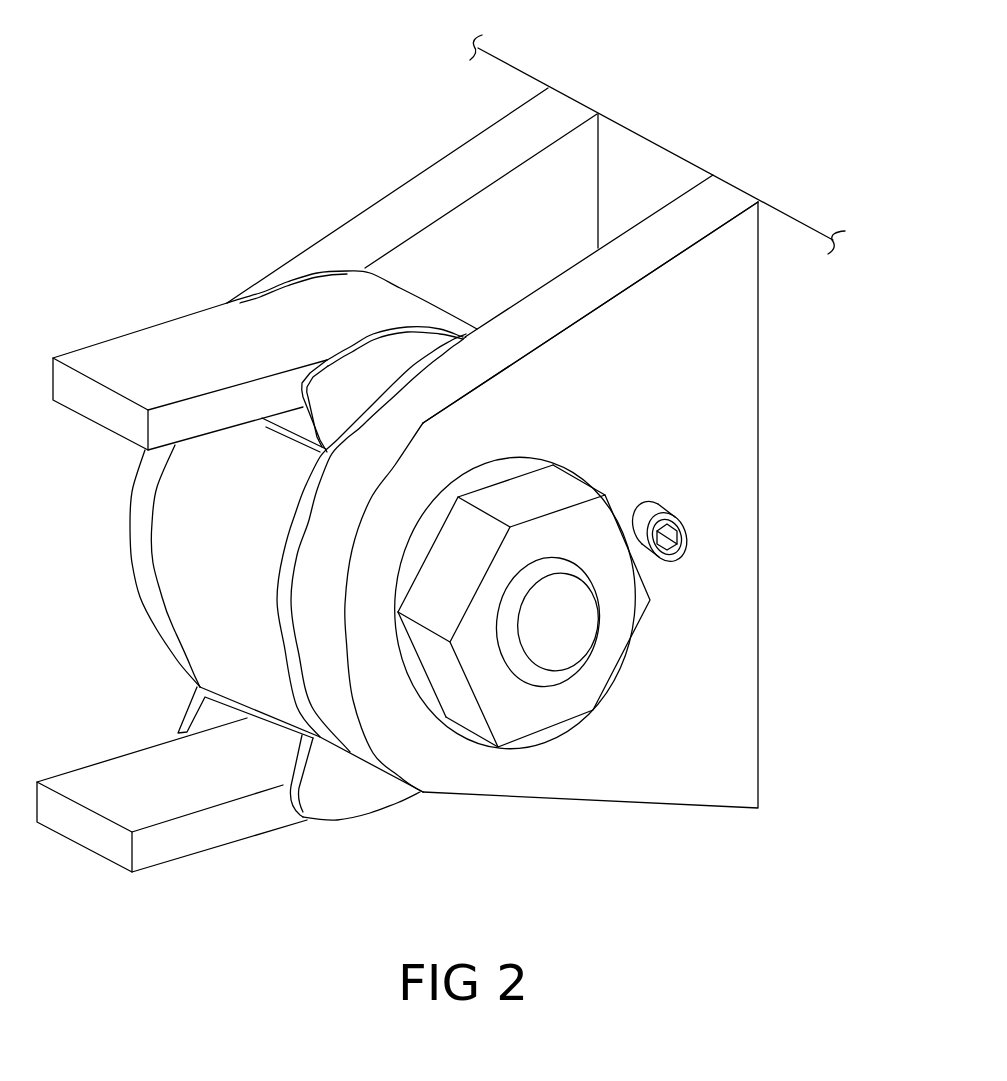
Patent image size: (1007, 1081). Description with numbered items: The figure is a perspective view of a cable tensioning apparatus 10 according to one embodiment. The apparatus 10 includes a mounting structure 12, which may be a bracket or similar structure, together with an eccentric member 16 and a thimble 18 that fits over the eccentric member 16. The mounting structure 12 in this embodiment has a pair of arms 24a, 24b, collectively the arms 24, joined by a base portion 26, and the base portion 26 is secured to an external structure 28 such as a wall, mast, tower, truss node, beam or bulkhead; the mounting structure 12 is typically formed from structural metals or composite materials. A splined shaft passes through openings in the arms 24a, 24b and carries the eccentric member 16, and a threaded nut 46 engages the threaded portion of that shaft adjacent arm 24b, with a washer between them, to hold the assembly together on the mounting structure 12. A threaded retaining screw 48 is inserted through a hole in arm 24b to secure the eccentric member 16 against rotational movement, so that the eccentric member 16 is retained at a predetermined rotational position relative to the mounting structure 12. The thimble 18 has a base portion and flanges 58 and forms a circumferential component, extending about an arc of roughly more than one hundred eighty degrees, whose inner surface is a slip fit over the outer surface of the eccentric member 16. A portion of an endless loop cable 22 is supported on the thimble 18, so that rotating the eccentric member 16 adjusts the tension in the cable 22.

The cable tensioning apparatus 10 is at (215, 165).
The mounting structure 12 is at (760, 333).
The eccentric member 16 is at (195, 601).
The thimble 18 is at (395, 833).
The endless loop cable 22 is at (164, 350).
The arms 24 is at (775, 407).
The arm 24a is at (475, 157).
The arm 24b is at (703, 210).
The base portion 26 is at (650, 170).
The external structure 28 is at (790, 265).
The threaded nut 46 is at (563, 650).
The threaded retaining screw 48 is at (683, 537).
The flanges 58 is at (377, 792).